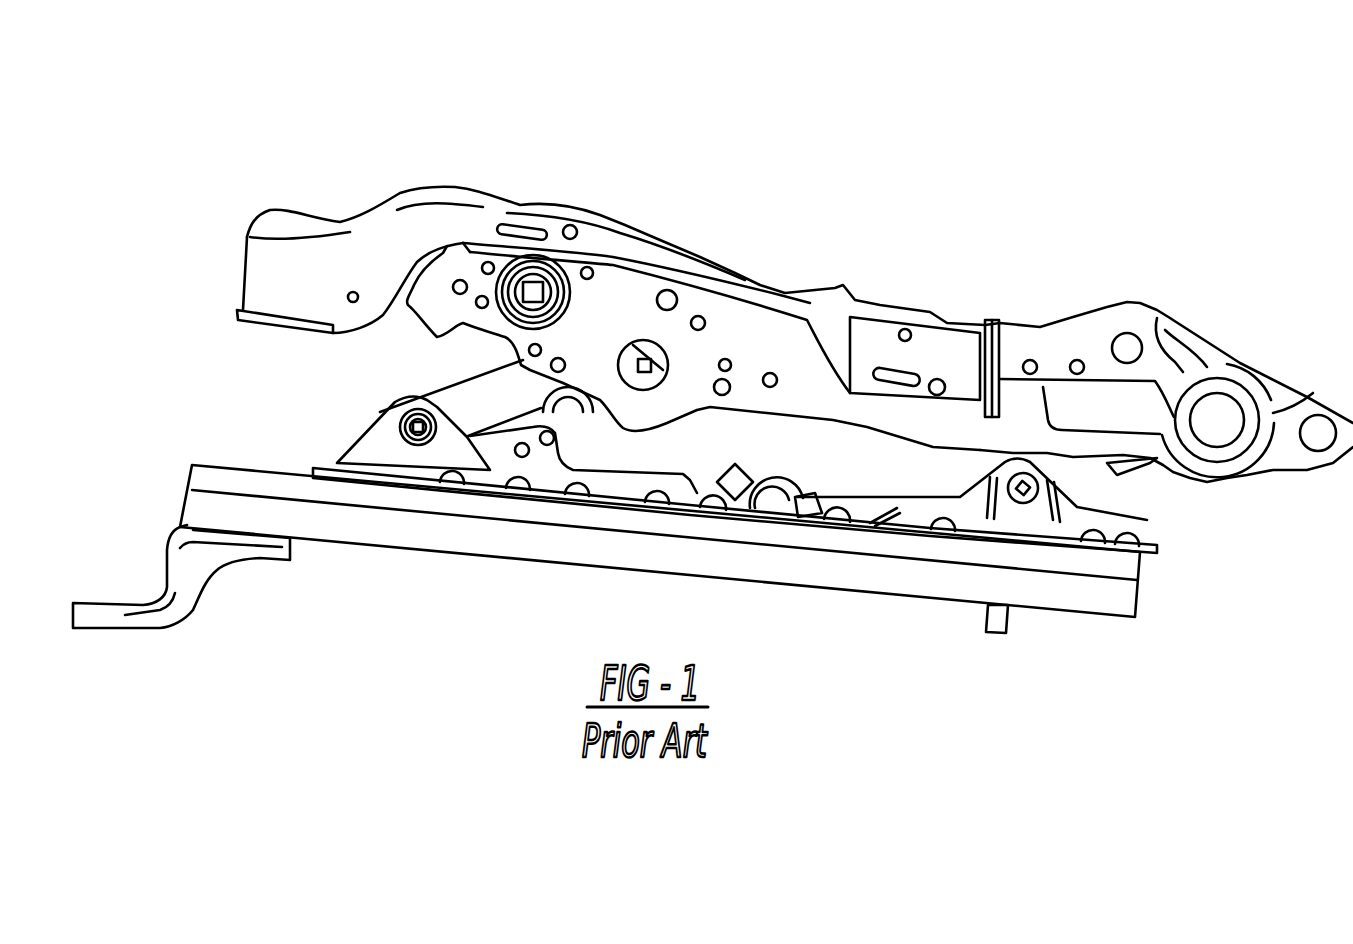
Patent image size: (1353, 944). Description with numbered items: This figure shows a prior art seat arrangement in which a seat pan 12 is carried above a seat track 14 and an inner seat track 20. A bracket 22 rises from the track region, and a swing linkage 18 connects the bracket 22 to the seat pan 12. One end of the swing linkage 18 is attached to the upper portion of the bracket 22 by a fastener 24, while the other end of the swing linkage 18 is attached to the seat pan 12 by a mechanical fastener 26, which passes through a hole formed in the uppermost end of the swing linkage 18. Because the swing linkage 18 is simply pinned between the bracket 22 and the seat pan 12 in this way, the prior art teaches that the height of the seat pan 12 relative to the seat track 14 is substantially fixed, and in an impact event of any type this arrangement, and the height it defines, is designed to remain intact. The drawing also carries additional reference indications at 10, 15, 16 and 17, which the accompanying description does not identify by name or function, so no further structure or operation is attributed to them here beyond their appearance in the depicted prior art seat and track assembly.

The seat adjuster assembly 10 is at (571, 147).
The seat pan 12 is at (370, 233).
The seat track 14 is at (792, 575).
The lower rail flange 15 is at (1085, 473).
The recliner arm 16 is at (1218, 407).
The pivot bolt 17 is at (1025, 490).
The swing linkage 18 is at (467, 391).
The inner seat track 20 is at (457, 490).
The bracket 22 is at (393, 453).
The fastener 24 is at (417, 427).
The mechanical fastener 26 is at (650, 347).